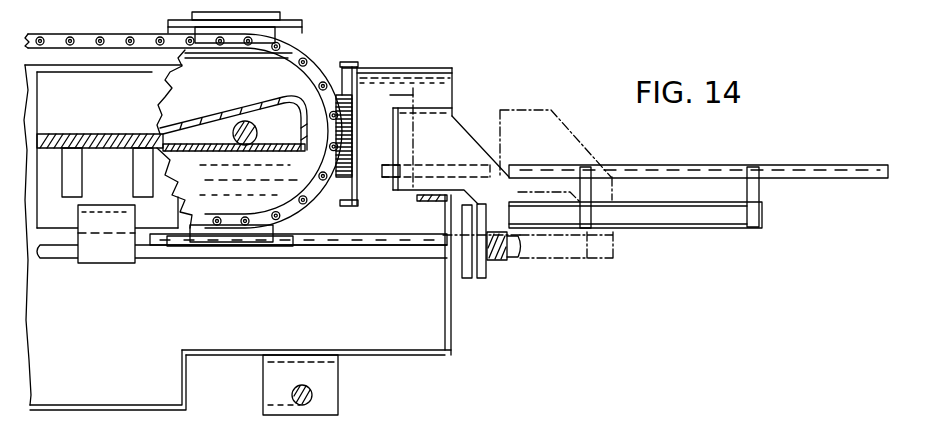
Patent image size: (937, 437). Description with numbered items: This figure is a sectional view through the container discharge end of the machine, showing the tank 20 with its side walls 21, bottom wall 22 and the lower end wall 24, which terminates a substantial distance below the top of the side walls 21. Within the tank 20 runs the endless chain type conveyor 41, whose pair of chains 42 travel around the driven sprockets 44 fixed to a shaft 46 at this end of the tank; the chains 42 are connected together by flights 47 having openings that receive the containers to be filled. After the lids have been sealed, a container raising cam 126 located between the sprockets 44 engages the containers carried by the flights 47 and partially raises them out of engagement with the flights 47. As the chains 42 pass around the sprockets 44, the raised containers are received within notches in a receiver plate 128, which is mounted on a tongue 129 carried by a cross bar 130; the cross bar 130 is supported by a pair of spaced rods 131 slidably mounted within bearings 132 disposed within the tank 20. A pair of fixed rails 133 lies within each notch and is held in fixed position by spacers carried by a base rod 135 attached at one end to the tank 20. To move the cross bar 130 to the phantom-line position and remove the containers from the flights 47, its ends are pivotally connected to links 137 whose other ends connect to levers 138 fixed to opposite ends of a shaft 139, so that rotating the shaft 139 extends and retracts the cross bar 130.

The tank 20 is at (428, 322).
The side walls 21 is at (70, 385).
The bottom wall 22 is at (116, 412).
The end wall 24 is at (454, 293).
The endless chain type conveyor 41 is at (195, 131).
The chains 42 is at (89, 46).
The driven sprockets 44 is at (200, 148).
The shaft 46 is at (240, 148).
The flights 47 is at (168, 23).
The container raising cam 126 is at (246, 88).
The receiver plate 128 is at (399, 135).
The tongue 129 is at (461, 132).
The cross bar 130 is at (505, 262).
The rods 131 is at (381, 248).
The bearings 132 is at (109, 247).
The fixed rails 133 is at (688, 149).
The base rod 135 is at (691, 222).
The links 137 is at (428, 436).
The levers 138 is at (325, 436).
The shaft 139 is at (292, 392).